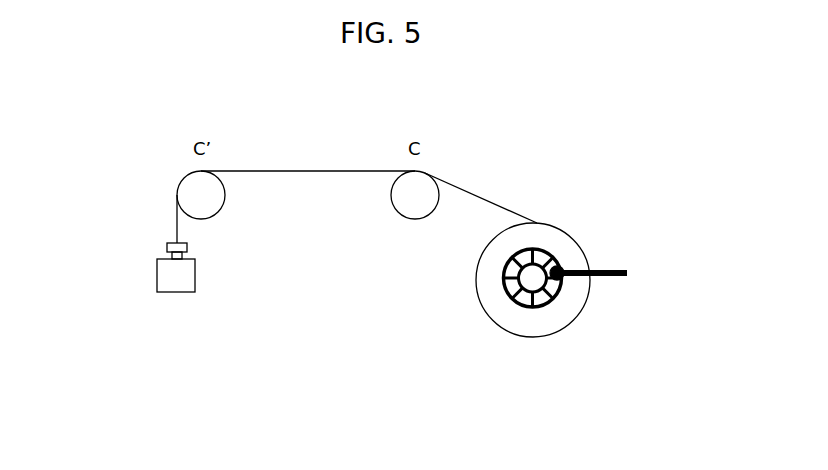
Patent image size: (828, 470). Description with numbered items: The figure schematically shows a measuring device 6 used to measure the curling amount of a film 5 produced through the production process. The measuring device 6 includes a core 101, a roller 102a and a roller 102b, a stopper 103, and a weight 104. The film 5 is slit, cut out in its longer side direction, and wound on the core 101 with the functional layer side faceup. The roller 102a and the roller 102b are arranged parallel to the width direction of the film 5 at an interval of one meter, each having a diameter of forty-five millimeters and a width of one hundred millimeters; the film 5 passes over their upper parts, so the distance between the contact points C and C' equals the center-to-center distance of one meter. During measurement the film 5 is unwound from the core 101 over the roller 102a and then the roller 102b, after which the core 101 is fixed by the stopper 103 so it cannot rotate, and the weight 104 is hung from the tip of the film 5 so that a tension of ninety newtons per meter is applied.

The film 5 is at (488, 199).
The measuring device 6 is at (141, 154).
The core 101 is at (547, 310).
The roller 102a is at (408, 210).
The roller 102b is at (208, 210).
The stopper 103 is at (608, 270).
The weight 104 is at (158, 276).